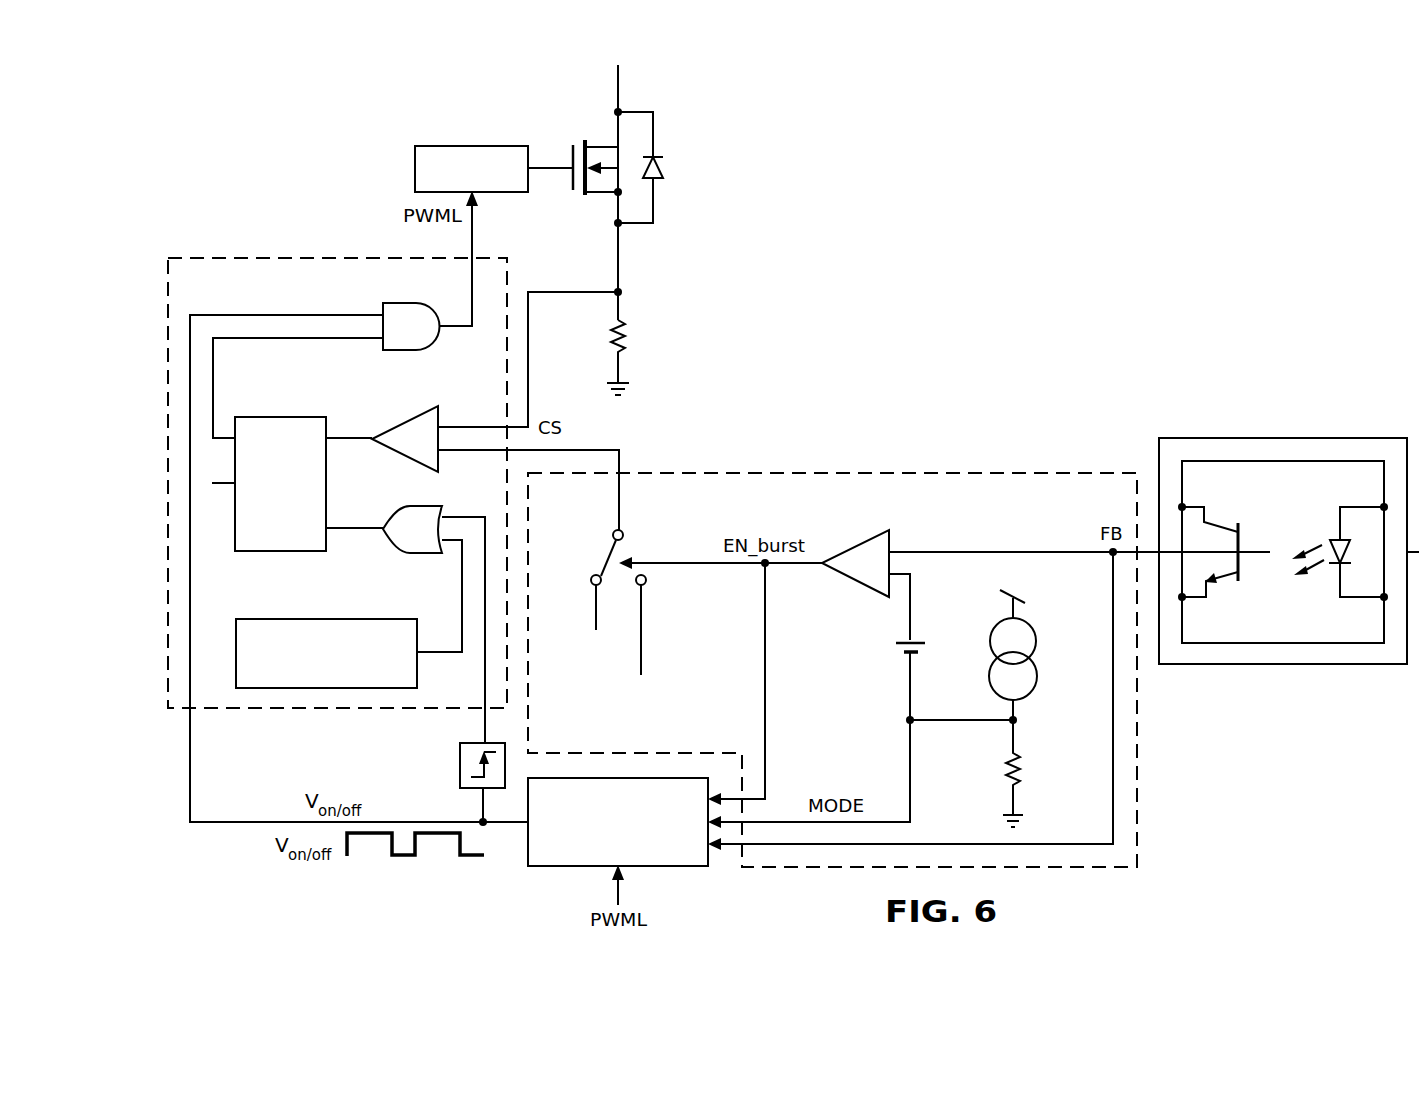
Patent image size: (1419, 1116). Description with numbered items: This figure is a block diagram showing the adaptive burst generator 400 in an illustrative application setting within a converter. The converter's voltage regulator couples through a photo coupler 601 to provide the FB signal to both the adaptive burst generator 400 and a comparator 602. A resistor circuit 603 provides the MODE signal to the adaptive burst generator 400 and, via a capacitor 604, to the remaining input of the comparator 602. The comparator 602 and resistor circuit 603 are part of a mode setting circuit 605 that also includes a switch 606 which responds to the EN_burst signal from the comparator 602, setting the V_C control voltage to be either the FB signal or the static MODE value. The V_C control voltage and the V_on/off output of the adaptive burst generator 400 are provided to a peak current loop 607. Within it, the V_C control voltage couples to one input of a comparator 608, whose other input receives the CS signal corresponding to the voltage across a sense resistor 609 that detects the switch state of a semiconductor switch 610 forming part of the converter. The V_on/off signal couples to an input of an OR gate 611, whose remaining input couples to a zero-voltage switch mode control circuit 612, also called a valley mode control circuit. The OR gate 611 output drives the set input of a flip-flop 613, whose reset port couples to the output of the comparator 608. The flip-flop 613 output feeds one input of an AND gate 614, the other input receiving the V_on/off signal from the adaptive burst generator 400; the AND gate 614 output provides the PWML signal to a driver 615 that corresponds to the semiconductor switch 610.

The adaptive burst generator 400 is at (561, 867).
The photo coupler 601 is at (1288, 430).
The comparator 602 is at (855, 584).
The resistor circuit 603 is at (1020, 713).
The capacitor 604 is at (921, 641).
The mode setting circuit 605 is at (836, 464).
The switch 606 is at (606, 556).
The peak current loop 607 is at (160, 482).
The comparator 608 is at (405, 458).
The sense resistor 609 is at (612, 334).
The semiconductor switch 610 is at (578, 130).
The OR gate 611 is at (428, 554).
The zero-voltage switch (ZVS) mode control circuit 612 is at (326, 619).
The flip-flop 613 is at (278, 417).
The AND gate 614 is at (400, 351).
The driver 615 is at (468, 146).